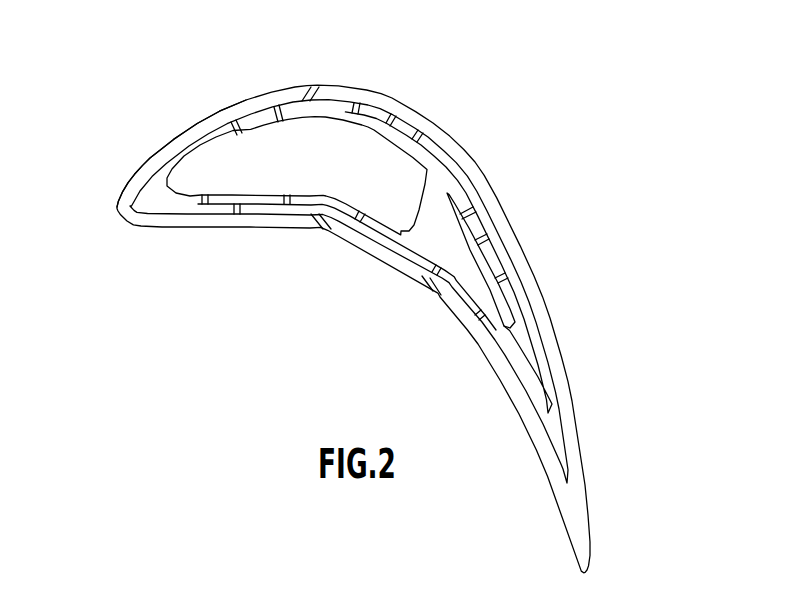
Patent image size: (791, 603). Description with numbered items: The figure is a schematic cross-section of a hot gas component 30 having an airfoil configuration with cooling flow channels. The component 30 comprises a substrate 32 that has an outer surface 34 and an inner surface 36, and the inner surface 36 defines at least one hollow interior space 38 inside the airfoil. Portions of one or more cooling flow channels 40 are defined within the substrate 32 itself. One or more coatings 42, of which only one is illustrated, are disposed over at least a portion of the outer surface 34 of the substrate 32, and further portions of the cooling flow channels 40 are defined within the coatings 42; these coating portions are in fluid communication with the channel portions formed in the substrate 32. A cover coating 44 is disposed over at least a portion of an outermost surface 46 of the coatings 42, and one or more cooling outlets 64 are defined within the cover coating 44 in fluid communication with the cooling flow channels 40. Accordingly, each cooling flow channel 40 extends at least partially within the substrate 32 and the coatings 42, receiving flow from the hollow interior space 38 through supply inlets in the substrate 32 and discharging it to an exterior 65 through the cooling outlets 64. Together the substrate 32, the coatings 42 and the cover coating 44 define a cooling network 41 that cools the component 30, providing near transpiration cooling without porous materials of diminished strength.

The hot gas component 30 is at (548, 65).
The substrate 32 is at (490, 250).
The outer surface 34 is at (471, 190).
The inner surface 36 is at (232, 197).
The hollow interior space 38 is at (342, 160).
The cooling flow channels 40 is at (234, 118).
The cooling network 41 is at (218, 127).
The coatings 42 is at (515, 285).
The cover coating 44 is at (363, 242).
The outermost surface 46 is at (402, 252).
The cooling outlets 64 is at (320, 88).
The exterior 65 is at (650, 186).